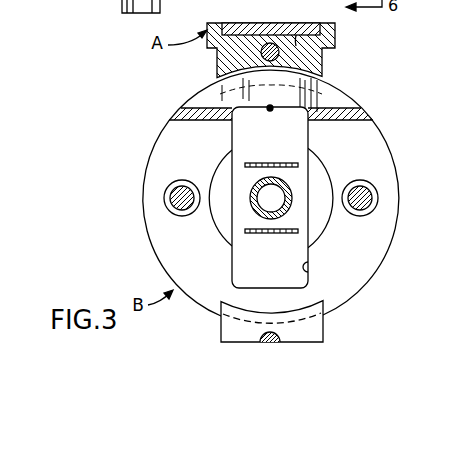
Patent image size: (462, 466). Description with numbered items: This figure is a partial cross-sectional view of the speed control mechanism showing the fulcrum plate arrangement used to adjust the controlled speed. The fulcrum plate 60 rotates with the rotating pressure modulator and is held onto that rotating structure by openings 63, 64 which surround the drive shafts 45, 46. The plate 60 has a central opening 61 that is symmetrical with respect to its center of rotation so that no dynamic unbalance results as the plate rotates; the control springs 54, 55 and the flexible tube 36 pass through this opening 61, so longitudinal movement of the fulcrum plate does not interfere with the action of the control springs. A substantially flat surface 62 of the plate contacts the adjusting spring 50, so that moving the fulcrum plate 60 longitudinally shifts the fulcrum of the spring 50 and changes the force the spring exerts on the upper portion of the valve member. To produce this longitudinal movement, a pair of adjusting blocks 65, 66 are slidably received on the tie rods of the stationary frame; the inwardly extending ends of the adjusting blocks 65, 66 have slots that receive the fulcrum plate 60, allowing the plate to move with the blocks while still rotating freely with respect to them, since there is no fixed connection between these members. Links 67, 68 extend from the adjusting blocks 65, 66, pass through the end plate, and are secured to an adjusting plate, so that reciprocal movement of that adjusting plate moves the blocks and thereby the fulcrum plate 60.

The fulcrum plate 60 is at (153, 144).
The central opening 61 is at (311, 270).
The flat surface 62 is at (233, 121).
The link 67 is at (231, 61).
The adjusting block 65 is at (336, 45).
The adjusting spring 50 is at (277, 108).
The control spring 54 is at (299, 160).
The control spring 55 is at (298, 231).
The flexible tube 36 is at (291, 189).
The opening 64 is at (180, 217).
The drive shaft 46 is at (174, 203).
The opening 63 is at (380, 204).
The drive shaft 45 is at (372, 197).
The adjusting block 66 is at (324, 323).
The link 68 is at (324, 341).